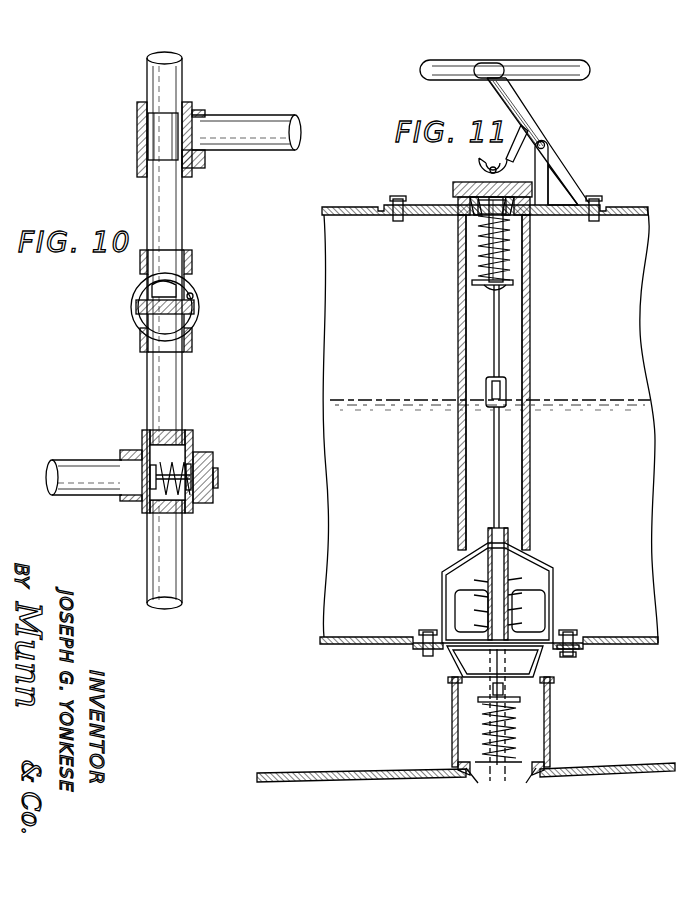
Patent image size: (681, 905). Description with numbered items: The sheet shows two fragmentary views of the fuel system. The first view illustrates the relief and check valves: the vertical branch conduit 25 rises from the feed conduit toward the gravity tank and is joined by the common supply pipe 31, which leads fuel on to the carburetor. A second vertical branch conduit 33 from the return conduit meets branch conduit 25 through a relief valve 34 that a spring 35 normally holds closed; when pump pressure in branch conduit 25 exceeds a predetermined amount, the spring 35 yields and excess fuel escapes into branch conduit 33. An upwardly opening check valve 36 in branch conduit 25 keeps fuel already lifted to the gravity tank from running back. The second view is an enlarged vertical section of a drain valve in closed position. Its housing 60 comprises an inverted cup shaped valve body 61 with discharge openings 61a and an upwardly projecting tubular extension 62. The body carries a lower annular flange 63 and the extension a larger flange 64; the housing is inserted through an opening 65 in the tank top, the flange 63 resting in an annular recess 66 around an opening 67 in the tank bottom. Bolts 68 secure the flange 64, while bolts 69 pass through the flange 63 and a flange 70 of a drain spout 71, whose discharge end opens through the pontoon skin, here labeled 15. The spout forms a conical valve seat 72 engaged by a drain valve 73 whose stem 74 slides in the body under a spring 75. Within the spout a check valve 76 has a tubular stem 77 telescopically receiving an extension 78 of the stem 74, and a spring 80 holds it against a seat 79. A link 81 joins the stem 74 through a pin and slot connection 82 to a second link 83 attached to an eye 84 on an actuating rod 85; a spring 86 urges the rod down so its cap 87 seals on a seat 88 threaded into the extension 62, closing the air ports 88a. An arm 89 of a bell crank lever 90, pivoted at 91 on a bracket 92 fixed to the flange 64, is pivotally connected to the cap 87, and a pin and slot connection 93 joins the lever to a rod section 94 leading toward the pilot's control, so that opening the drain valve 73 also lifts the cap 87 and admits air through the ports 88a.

In FIG. 11, the base plate 15 is at (375, 779).
In FIG. 10, the vertical branch conduit 25 is at (173, 556).
In FIG. 10, the common supply pipe 31 is at (235, 138).
In FIG. 10, the vertical branch conduit 33 is at (67, 462).
In FIG. 10, the relief valve 34 is at (153, 484).
In FIG. 10, the spring 35 is at (172, 462).
In FIG. 10, the check valve 36 is at (132, 304).
In FIG. 11, the housing 60 is at (530, 349).
In FIG. 11, the valve body 61 is at (548, 571).
In FIG. 11, the discharge openings 61a is at (534, 608).
In FIG. 11, the tubular extension 62 is at (520, 300).
In FIG. 11, the annular flange 63 is at (574, 637).
In FIG. 11, the flange 64 is at (566, 200).
In FIG. 11, the opening 65 is at (417, 221).
In FIG. 11, the annular recess 66 is at (584, 637).
In FIG. 11, the opening 67 is at (449, 649).
In FIG. 11, the bolts 68 is at (397, 206).
In FIG. 11, the bolts 69 is at (568, 657).
In FIG. 11, the flange 70 is at (579, 647).
In FIG. 11, the drain spout 71 is at (455, 739).
In FIG. 11, the conical valve seat 72 is at (465, 655).
In FIG. 11, the drain valve 73 is at (470, 661).
In FIG. 11, the stem 74 is at (497, 604).
In FIG. 11, the spring 75 is at (487, 595).
In FIG. 11, the check valve 76 is at (503, 774).
In FIG. 11, the tubular stem 77 is at (510, 726).
In FIG. 11, the extension 78 is at (503, 689).
In FIG. 11, the seat 79 is at (467, 771).
In FIG. 11, the spring 80 is at (517, 745).
In FIG. 11, the link 81 is at (500, 488).
In FIG. 11, the pin and slot connection 82 is at (507, 393).
In FIG. 11, the second link 83 is at (500, 328).
In FIG. 11, the eye 84 is at (486, 291).
In FIG. 11, the actuating rod 85 is at (503, 257).
In FIG. 11, the spring 86 is at (478, 265).
In FIG. 11, the cap 87 is at (474, 186).
In FIG. 11, the seat 88 is at (470, 212).
In FIG. 11, the air ports 88a is at (470, 233).
In FIG. 11, the arm 89 is at (518, 128).
In FIG. 11, the bell crank lever 90 is at (530, 128).
In FIG. 11, the pivot 91 is at (547, 145).
In FIG. 11, the bracket 92 is at (562, 169).
In FIG. 11, the pin and slot connection 93 is at (488, 66).
In FIG. 11, the rod section 94 is at (566, 70).